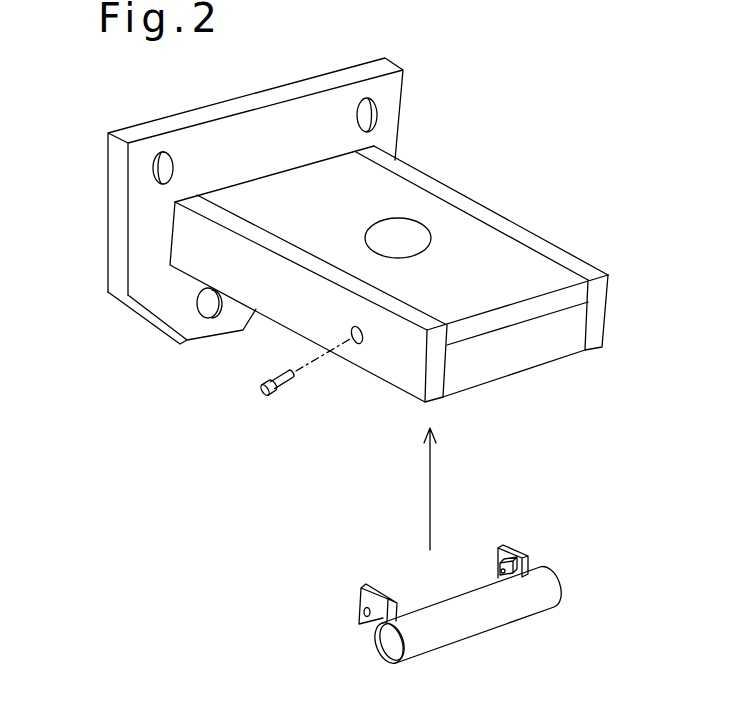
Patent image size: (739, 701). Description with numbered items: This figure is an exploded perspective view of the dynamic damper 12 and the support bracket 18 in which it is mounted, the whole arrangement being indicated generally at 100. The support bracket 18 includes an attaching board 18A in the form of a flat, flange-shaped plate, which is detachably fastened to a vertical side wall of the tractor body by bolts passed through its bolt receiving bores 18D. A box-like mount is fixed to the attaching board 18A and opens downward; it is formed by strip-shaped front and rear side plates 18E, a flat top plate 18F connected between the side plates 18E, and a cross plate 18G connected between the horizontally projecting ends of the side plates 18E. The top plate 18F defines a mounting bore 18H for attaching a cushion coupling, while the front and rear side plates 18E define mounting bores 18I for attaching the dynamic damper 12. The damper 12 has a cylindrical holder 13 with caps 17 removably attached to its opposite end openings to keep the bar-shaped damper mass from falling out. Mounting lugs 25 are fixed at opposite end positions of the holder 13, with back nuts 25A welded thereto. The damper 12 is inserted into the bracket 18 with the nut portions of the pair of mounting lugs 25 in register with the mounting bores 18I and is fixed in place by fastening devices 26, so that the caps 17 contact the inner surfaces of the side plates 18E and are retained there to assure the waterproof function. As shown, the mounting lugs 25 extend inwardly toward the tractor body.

The holder assembly 100 is at (188, 385).
The support bracket 18 is at (477, 139).
The attaching board 18A is at (108, 245).
The mounting holes 18D is at (151, 170).
The front and rear side plates 18E is at (500, 222).
The top plate 18F is at (547, 273).
The cross plate 18G is at (541, 346).
The mounting bore 18H is at (418, 224).
The mounting bore 18I is at (356, 343).
The fastening device 26 is at (258, 394).
The dynamic damper 12 is at (560, 615).
The cylindrical holder 13 is at (488, 613).
The cap 17 is at (385, 642).
The mounting lug 25 is at (365, 585).
The back nut 25A is at (497, 566).